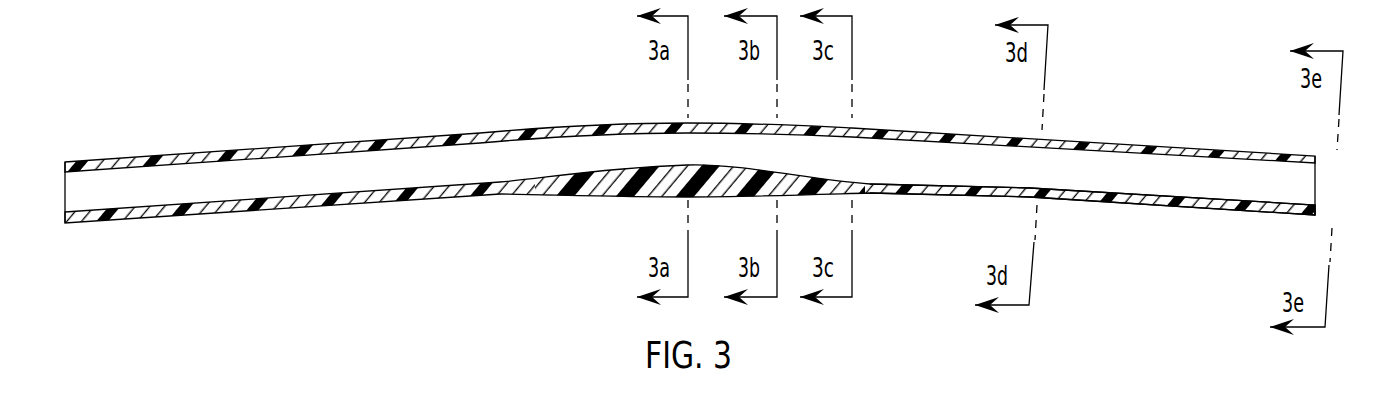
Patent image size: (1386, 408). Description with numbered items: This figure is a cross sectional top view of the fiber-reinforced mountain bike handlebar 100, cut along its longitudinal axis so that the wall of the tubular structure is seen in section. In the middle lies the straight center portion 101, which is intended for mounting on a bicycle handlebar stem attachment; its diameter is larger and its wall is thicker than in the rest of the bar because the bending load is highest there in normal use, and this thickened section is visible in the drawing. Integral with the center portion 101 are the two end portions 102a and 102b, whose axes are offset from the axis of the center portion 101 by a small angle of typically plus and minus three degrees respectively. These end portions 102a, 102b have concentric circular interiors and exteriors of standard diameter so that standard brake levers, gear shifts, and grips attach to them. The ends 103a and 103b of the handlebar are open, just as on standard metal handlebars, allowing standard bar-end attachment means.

The fiber-reinforced mountain bike handlebar 100 is at (714, 159).
The center portion 101 is at (648, 124).
The end portion 102a is at (173, 212).
The end portion 102b is at (1178, 205).
The end 103a is at (73, 190).
The end 103b is at (1303, 185).